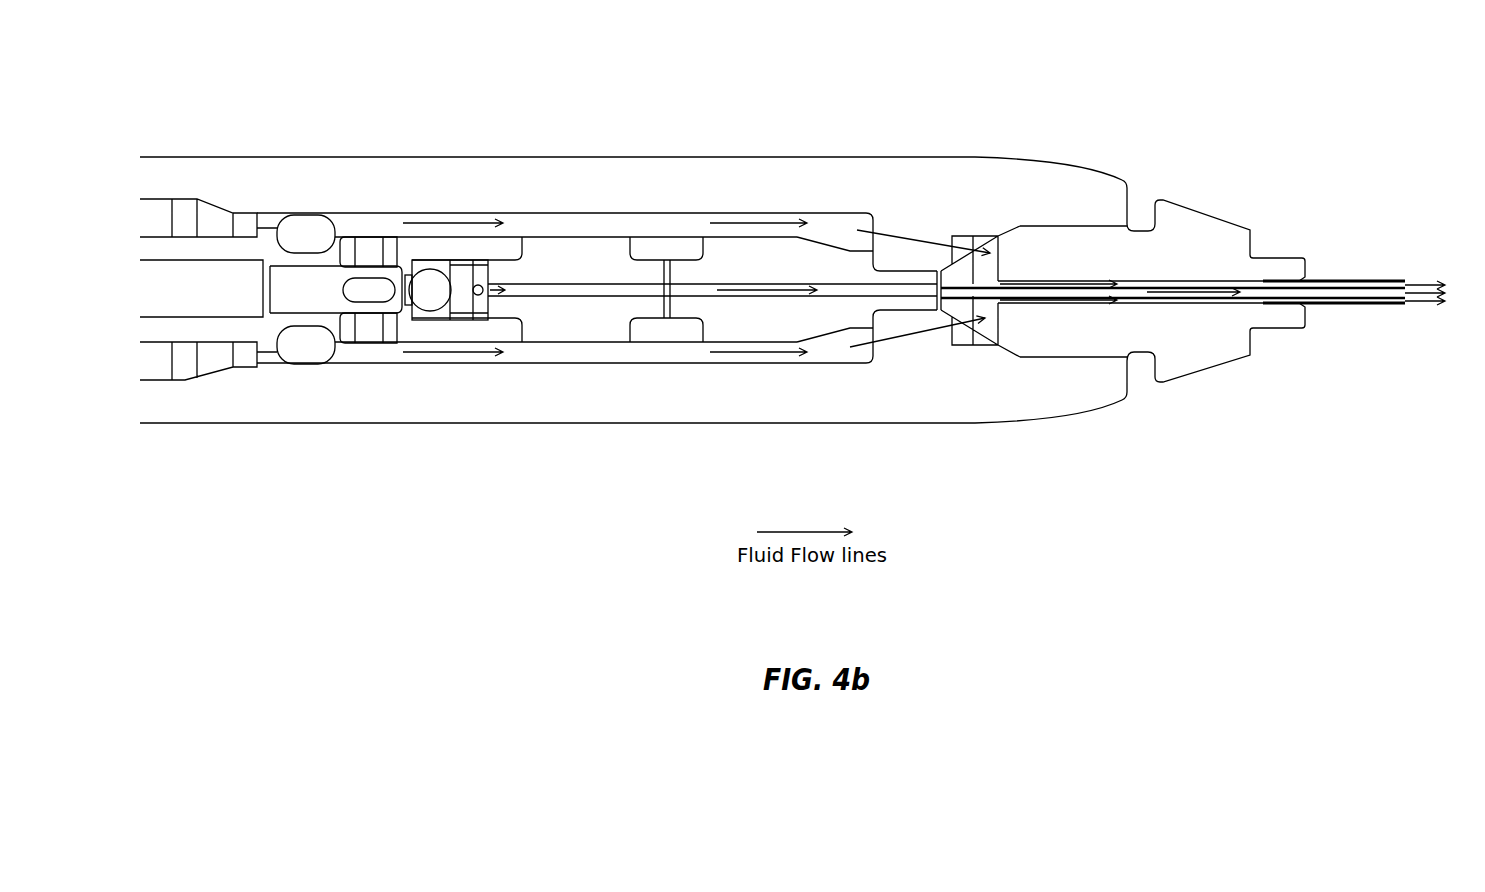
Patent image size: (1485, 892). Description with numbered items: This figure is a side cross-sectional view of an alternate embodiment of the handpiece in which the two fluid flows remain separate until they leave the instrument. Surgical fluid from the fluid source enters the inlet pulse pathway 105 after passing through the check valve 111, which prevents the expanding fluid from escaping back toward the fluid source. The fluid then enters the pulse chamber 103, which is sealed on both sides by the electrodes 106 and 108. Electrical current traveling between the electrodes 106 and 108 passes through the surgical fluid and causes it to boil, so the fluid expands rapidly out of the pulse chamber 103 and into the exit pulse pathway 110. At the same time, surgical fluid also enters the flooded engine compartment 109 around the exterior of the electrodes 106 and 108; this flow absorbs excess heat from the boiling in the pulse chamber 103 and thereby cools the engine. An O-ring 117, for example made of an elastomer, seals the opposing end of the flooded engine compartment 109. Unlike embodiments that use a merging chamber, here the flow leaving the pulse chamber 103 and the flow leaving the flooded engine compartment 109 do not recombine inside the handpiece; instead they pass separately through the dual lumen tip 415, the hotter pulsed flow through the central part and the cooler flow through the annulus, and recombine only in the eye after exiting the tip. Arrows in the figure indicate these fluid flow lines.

The pulse chamber 103 is at (668, 278).
The inlet pulse pathway 105 is at (548, 288).
The electrode 106 is at (787, 268).
The electrode 108 is at (622, 268).
The flooded engine compartment 109 is at (648, 357).
The exit pulse pathway 110 is at (847, 293).
The check valve 111 is at (432, 298).
The O-ring 117 is at (307, 223).
The dual lumen tip 415 is at (1370, 281).